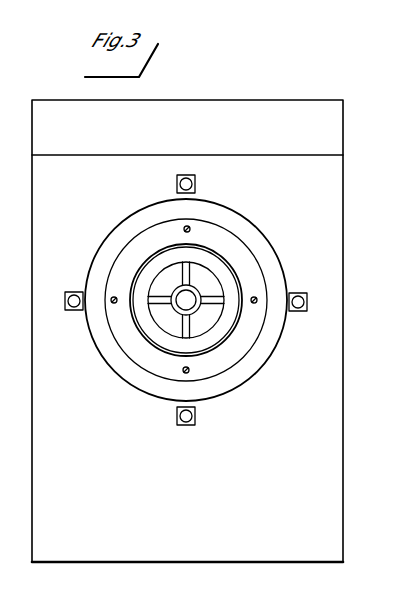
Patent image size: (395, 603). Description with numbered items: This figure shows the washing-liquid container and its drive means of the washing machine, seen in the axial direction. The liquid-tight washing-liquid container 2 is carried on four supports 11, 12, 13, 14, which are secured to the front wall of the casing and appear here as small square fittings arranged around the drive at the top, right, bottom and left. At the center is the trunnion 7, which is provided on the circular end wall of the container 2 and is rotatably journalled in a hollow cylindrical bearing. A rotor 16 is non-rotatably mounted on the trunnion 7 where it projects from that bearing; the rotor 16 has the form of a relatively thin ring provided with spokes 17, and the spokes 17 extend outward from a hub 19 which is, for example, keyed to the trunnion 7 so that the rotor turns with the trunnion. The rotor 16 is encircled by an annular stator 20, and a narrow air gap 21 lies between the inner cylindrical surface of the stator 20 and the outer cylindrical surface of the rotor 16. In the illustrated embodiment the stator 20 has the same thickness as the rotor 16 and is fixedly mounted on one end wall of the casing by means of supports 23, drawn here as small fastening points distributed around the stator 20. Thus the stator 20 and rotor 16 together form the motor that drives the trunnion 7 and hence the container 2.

The washing-liquid container 2 is at (258, 237).
The trunnion 7 is at (198, 297).
The support 11 is at (196, 185).
The support 12 is at (296, 293).
The support 13 is at (196, 418).
The support 14 is at (78, 292).
The rotor 16 is at (157, 353).
The spokes 17 is at (176, 303).
The hub 19 is at (170, 345).
The stator 20 is at (117, 268).
The air gap 21 is at (157, 243).
The supports 23 is at (190, 227).